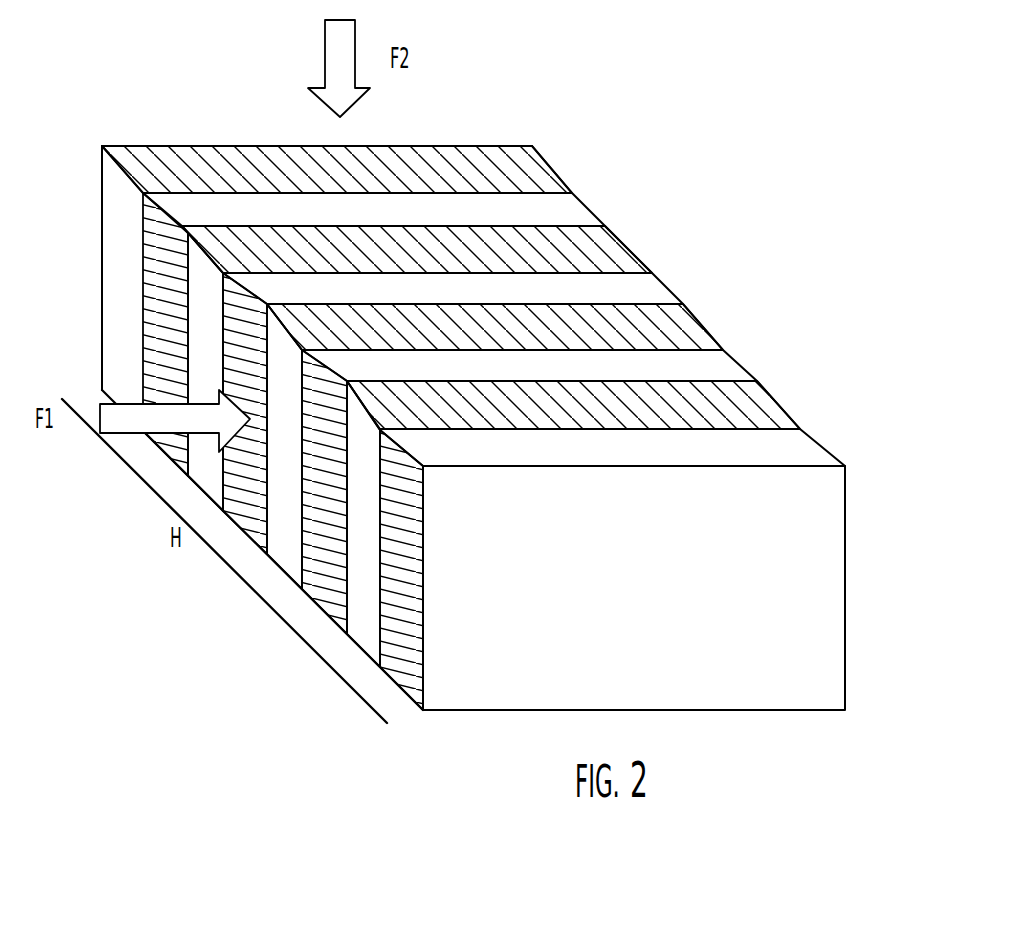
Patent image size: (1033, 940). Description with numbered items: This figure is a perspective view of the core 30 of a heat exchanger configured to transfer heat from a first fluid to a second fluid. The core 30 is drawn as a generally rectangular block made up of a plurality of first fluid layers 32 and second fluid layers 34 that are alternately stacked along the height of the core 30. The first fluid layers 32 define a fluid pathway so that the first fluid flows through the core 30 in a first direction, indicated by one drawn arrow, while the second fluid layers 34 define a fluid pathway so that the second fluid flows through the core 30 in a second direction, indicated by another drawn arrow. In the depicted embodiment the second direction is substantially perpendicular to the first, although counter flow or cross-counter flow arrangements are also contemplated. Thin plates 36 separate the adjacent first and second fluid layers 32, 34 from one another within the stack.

The core 30 is at (473, 383).
The first fluid layers 32 is at (362, 620).
The second fluid layers 34 is at (635, 295).
The thin plates 36 is at (223, 480).